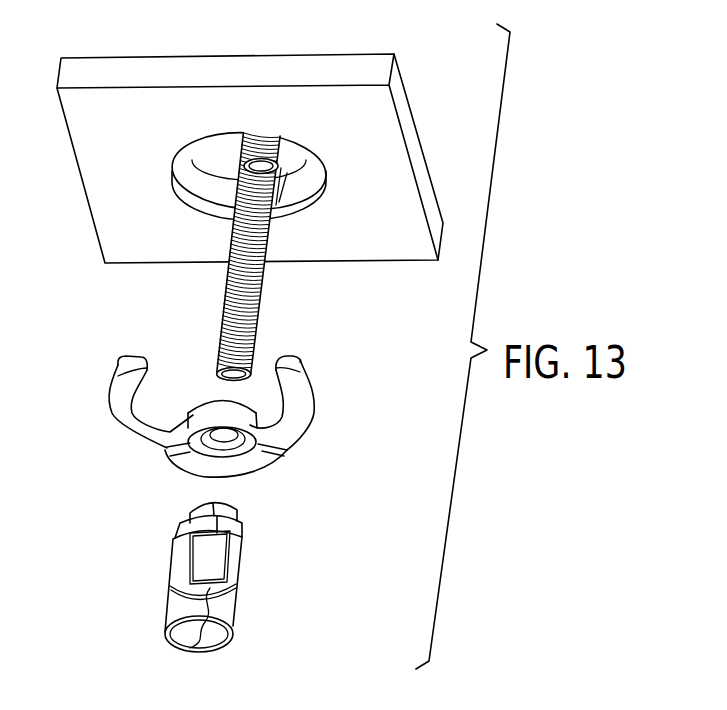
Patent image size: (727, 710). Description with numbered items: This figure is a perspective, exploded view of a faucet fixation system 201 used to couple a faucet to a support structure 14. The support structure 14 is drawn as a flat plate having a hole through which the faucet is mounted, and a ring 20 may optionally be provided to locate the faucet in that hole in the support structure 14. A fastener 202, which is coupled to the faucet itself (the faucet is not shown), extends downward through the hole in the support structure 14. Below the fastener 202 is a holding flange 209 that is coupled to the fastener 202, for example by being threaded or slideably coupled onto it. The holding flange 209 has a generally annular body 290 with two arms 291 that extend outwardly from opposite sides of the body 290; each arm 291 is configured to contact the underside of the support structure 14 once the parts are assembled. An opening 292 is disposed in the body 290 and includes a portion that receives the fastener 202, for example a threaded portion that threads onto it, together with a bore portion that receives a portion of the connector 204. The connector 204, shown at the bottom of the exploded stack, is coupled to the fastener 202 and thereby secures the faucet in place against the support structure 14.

The faucet fixation system 201 is at (125, 35).
The support structure 14 is at (297, 65).
The ring 20 is at (197, 173).
The fastener 202 is at (245, 322).
The holding flange 209 is at (320, 462).
The arms 291 is at (118, 372).
The annular body 290 is at (202, 457).
The opening 292 is at (223, 440).
The connector 204 is at (155, 575).